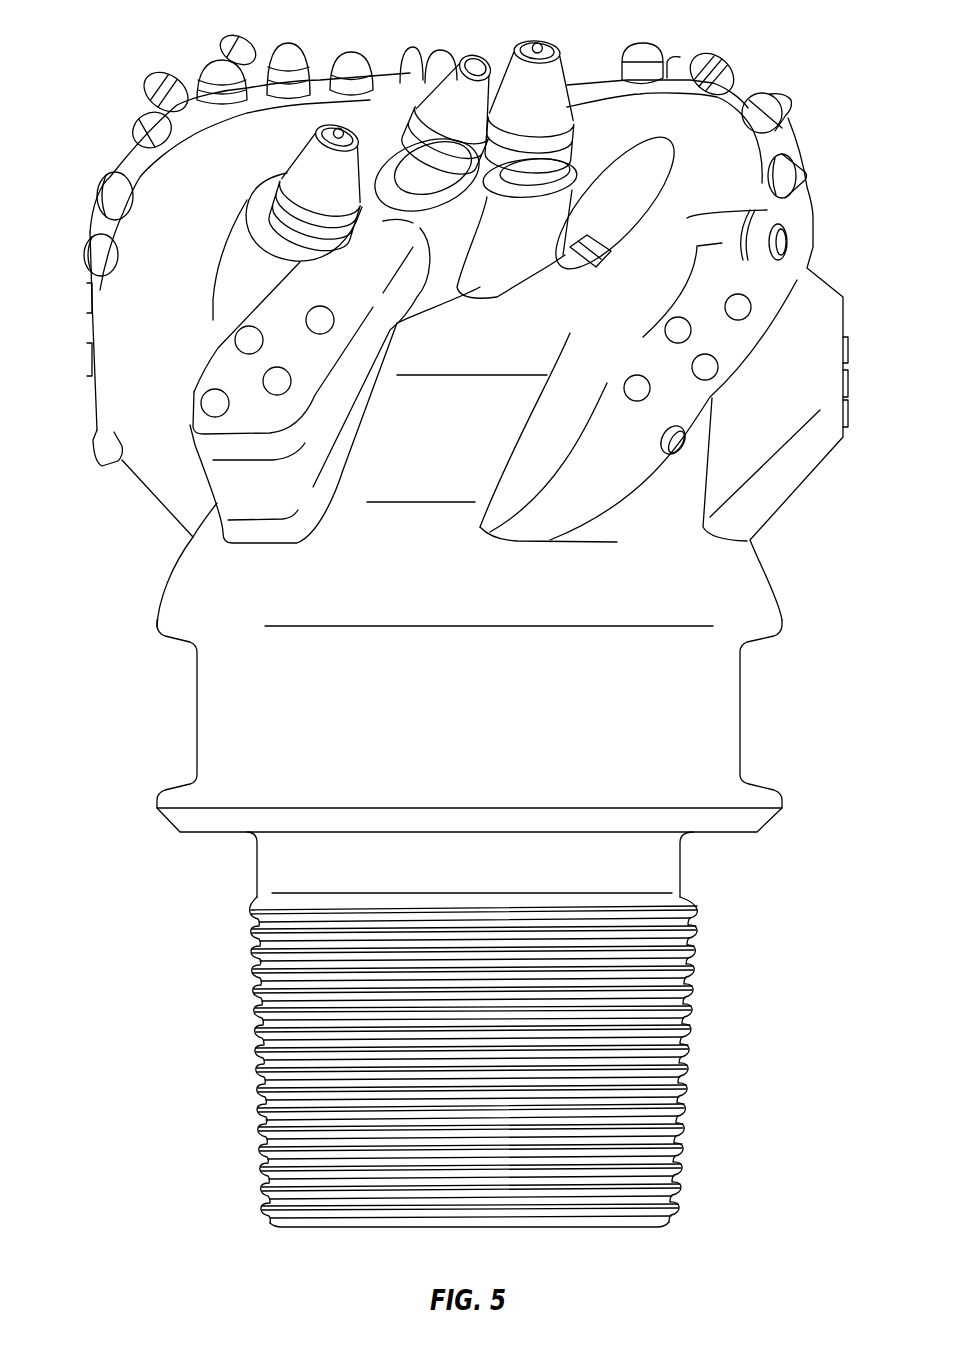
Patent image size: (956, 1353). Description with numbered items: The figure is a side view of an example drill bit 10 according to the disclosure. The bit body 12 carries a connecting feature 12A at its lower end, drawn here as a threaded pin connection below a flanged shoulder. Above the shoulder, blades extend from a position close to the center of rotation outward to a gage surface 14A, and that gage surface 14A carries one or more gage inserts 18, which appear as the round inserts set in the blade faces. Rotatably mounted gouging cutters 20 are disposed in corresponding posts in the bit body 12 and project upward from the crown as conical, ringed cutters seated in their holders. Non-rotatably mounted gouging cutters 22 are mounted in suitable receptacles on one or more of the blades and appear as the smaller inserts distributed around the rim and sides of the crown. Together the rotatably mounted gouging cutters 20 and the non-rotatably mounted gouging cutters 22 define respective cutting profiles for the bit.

The drill bit 10 is at (178, 928).
The bit body 12 is at (208, 710).
The connecting feature 12A is at (260, 1062).
The gage surface 14A is at (253, 422).
The gage inserts 18 is at (207, 405).
The rotatably mounted gouging cutters 20 is at (333, 130).
The non-rotatably mounted gouging cutters 22 is at (138, 122).